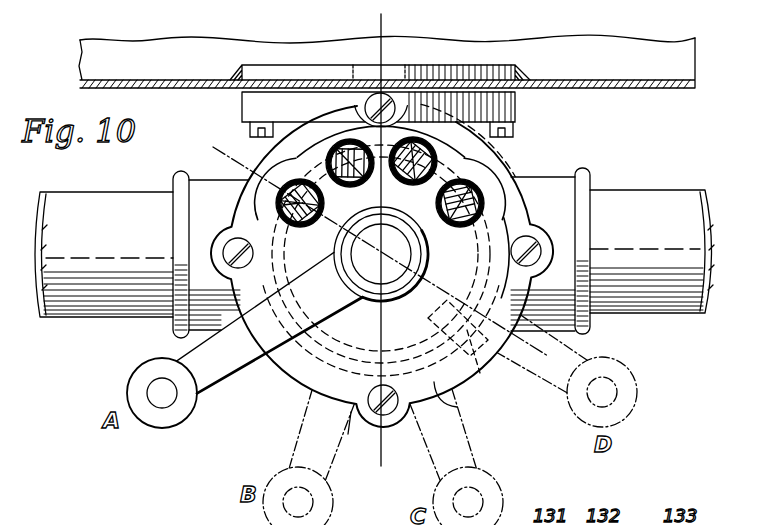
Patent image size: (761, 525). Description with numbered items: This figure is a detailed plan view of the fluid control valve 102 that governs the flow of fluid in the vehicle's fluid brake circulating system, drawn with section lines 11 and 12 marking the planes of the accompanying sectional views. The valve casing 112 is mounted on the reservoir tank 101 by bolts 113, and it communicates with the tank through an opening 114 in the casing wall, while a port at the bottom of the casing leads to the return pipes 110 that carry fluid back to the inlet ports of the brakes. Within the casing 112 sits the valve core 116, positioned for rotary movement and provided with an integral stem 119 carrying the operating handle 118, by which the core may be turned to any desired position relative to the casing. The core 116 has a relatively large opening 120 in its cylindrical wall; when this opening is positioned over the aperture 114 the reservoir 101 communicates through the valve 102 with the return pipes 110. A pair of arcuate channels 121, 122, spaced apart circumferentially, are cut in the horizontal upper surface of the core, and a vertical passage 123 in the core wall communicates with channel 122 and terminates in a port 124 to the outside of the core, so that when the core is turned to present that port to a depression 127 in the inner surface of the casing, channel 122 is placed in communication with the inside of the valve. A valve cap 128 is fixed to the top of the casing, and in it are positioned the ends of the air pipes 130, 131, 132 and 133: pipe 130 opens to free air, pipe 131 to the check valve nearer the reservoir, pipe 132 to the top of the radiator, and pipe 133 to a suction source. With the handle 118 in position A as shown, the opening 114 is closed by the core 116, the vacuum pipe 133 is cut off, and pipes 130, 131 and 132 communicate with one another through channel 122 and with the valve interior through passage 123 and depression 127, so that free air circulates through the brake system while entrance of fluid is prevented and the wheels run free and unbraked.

The section line 11- 11 is at (376, 453).
The section line 12- 12 is at (558, 345).
The tank 101 is at (650, 86).
The fluid control valve 102 is at (283, 375).
The return pipes 110 is at (79, 212).
The valve casing 112 is at (362, 433).
The bolts 113 is at (250, 130).
The opening 114 is at (345, 118).
The valve core 116 is at (355, 302).
The operating handle 118 is at (203, 357).
The stem 119 is at (362, 272).
The opening 120 is at (512, 103).
The arcuate channel 121 is at (427, 304).
The arcuate channel 122 is at (494, 153).
The vertical passage 123 is at (283, 205).
The port 124 is at (288, 228).
The depression 127 is at (278, 197).
The valve cap 128 is at (457, 405).
The air pipe 130 is at (300, 150).
The air pipe 131 is at (348, 140).
The air pipe 132 is at (420, 140).
The vacuum pipe 133 is at (474, 190).